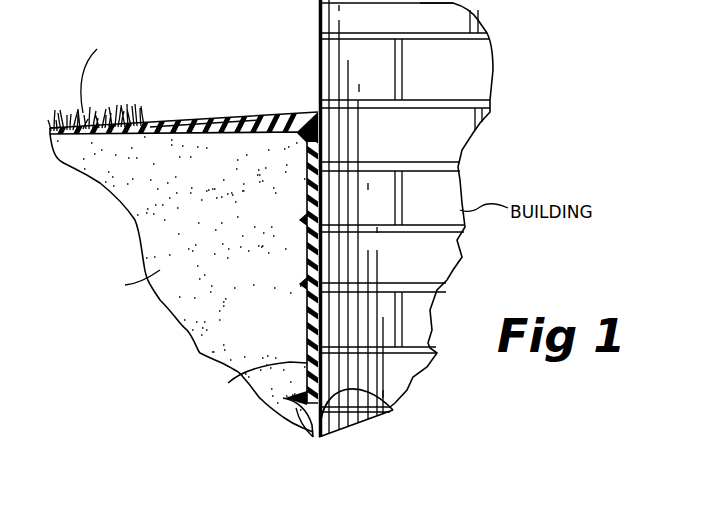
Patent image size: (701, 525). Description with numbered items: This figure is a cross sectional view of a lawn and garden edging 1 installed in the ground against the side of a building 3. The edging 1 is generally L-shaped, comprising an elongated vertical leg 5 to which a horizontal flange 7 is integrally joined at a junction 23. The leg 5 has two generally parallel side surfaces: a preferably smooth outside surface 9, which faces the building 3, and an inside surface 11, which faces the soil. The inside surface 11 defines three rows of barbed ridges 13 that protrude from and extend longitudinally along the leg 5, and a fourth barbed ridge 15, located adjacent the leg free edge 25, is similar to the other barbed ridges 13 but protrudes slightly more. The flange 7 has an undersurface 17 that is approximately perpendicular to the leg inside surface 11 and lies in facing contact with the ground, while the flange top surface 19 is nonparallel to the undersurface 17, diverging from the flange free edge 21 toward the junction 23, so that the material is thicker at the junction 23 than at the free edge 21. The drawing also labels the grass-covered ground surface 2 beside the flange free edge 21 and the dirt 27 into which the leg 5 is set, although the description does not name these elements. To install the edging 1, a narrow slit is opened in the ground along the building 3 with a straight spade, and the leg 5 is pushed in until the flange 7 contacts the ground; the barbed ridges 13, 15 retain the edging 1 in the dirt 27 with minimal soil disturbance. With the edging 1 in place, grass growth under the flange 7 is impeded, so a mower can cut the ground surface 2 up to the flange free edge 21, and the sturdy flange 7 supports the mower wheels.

The lawn and garden edging 1 is at (219, 92).
The ground surface 2 is at (50, 116).
The building 3 is at (311, 21).
The vertical leg 5 is at (294, 257).
The horizontal flange 7 is at (239, 110).
The outside surface 9 is at (390, 407).
The inside surface 11 is at (243, 377).
The barbed ridges 13 is at (302, 219).
The fourth barbed ridge 15 is at (283, 420).
The flange undersurface 17 is at (203, 133).
The flange top surface 19 is at (188, 128).
The flange free edge 21 is at (138, 128).
The junction 23 is at (313, 112).
The leg free edge 25 is at (310, 430).
The backfill soil 27 is at (117, 177).